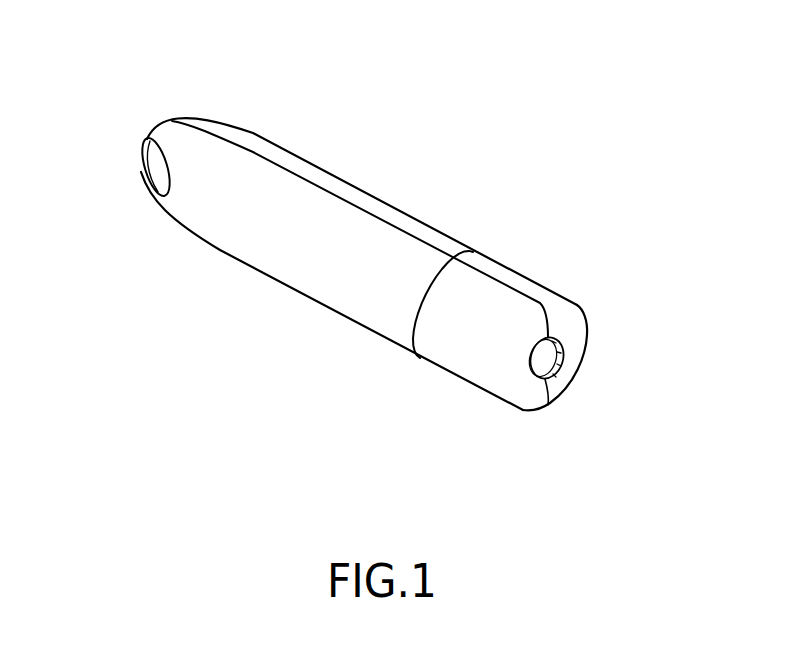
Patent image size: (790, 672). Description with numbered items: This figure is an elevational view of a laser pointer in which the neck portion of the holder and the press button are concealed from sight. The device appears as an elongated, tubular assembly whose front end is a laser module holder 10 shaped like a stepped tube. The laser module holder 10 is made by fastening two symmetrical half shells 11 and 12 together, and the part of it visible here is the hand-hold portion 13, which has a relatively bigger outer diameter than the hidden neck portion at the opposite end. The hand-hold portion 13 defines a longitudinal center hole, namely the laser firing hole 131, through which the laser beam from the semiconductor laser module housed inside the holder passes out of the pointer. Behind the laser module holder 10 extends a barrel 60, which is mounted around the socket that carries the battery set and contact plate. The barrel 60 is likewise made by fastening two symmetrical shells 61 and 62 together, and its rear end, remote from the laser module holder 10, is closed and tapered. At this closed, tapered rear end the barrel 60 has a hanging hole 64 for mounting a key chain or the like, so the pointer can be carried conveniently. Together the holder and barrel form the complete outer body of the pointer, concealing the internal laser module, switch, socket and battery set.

The laser module holder 10 is at (414, 328).
The half shell 11 is at (468, 384).
The half shell 12 is at (605, 388).
The hand-hold portion 13 is at (533, 272).
The laser firing hole 131 is at (563, 346).
The barrel 60 is at (310, 169).
The shell 61 is at (184, 144).
The shell 62 is at (248, 130).
The hanging hole 64 is at (146, 171).